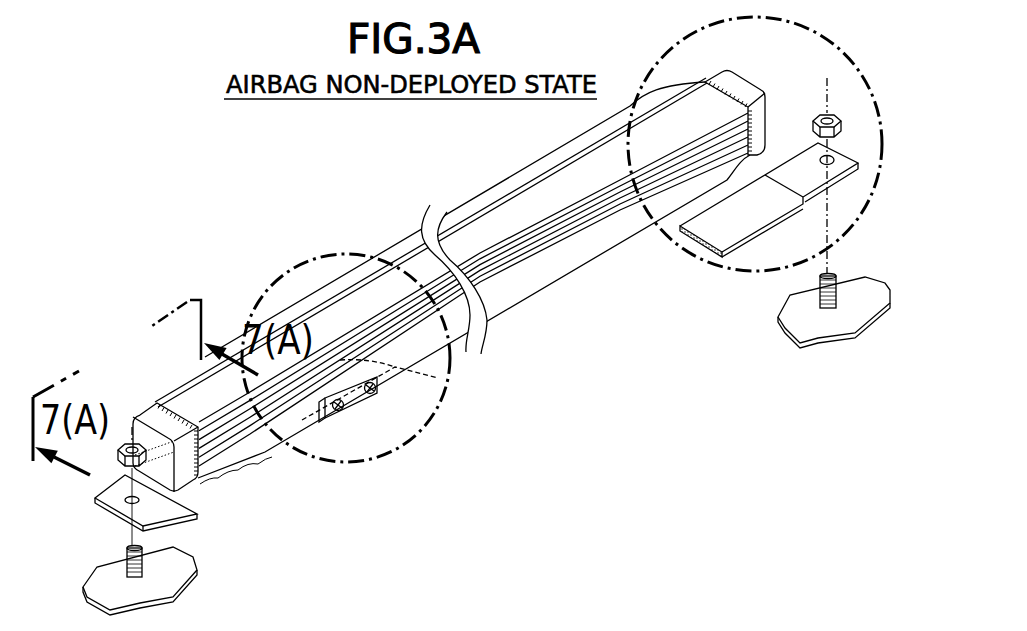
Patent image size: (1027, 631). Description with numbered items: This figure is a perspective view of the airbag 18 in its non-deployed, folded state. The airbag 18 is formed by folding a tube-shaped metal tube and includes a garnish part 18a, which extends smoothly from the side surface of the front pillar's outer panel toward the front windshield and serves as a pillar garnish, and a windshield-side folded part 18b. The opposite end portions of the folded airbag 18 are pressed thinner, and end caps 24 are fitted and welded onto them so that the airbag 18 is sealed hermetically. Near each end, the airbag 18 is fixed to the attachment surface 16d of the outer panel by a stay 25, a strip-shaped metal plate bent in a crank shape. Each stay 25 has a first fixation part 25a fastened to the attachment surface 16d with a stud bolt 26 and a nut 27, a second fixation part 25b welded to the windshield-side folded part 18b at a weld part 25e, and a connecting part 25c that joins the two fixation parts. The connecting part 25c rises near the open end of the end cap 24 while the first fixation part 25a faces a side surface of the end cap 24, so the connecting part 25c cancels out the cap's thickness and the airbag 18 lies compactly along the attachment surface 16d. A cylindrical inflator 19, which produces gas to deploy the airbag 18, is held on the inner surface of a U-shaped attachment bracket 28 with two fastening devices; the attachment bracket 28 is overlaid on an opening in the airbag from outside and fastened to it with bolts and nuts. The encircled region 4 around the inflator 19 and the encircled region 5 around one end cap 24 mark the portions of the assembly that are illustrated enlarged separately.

The airbag device lower portion region 4 is at (432, 441).
The airbag device upper portion region 5 is at (622, 66).
The attachment surface 16d is at (182, 571).
The airbag 18 is at (452, 281).
The garnish part 18a is at (516, 204).
The windshield-side folded part 18b is at (572, 242).
The inflator 19 is at (446, 380).
The end cap 24 is at (152, 416).
The stay 25 is at (466, 337).
The first fixation part 25a is at (837, 171).
The second fixation part 25b is at (708, 236).
The connecting part 25c is at (786, 185).
The weld part 25e is at (690, 238).
The stud bolt 26 is at (127, 548).
The nut 27 is at (126, 443).
The attachment bracket 28 is at (353, 408).